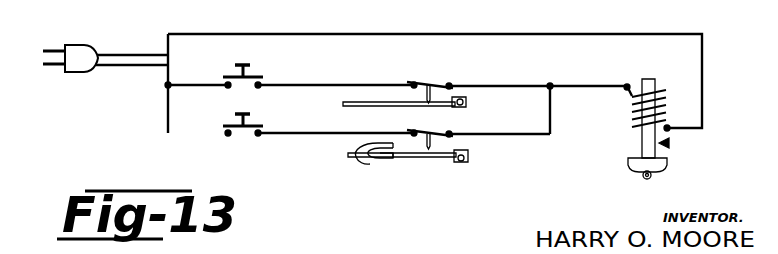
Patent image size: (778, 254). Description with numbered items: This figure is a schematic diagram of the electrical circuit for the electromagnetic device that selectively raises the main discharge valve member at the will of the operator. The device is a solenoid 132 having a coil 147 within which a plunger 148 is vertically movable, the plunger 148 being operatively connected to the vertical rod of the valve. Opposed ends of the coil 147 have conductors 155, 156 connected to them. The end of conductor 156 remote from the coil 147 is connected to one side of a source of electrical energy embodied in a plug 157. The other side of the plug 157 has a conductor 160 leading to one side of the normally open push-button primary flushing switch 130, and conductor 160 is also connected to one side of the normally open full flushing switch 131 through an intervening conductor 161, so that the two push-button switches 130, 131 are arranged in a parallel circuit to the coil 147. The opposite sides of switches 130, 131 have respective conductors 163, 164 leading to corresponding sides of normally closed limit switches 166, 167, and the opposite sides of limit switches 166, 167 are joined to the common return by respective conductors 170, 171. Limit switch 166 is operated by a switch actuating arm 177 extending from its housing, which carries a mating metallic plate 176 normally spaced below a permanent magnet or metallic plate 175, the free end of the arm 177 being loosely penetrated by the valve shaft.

The plug 157 is at (76, 53).
The conductor 160 is at (100, 66).
The intervening conductor 161 is at (186, 85).
The full flushing switch 131 is at (261, 83).
The primary flushing switch 130 is at (261, 125).
The conductor 164 is at (306, 85).
The conductor 163 is at (312, 134).
The limit switch 167 is at (441, 80).
The limit switch 166 is at (443, 129).
The conductor 171 is at (505, 86).
The conductor 170 is at (507, 135).
The metallic plate 175 is at (360, 152).
The mating metallic plate 176 is at (371, 161).
The switch actuating arm 177 is at (410, 157).
The conductor 155 is at (574, 87).
The conductor 156 is at (265, 34).
The coil 147 is at (634, 110).
The plunger 148 is at (644, 150).
The solenoid 132 is at (666, 143).